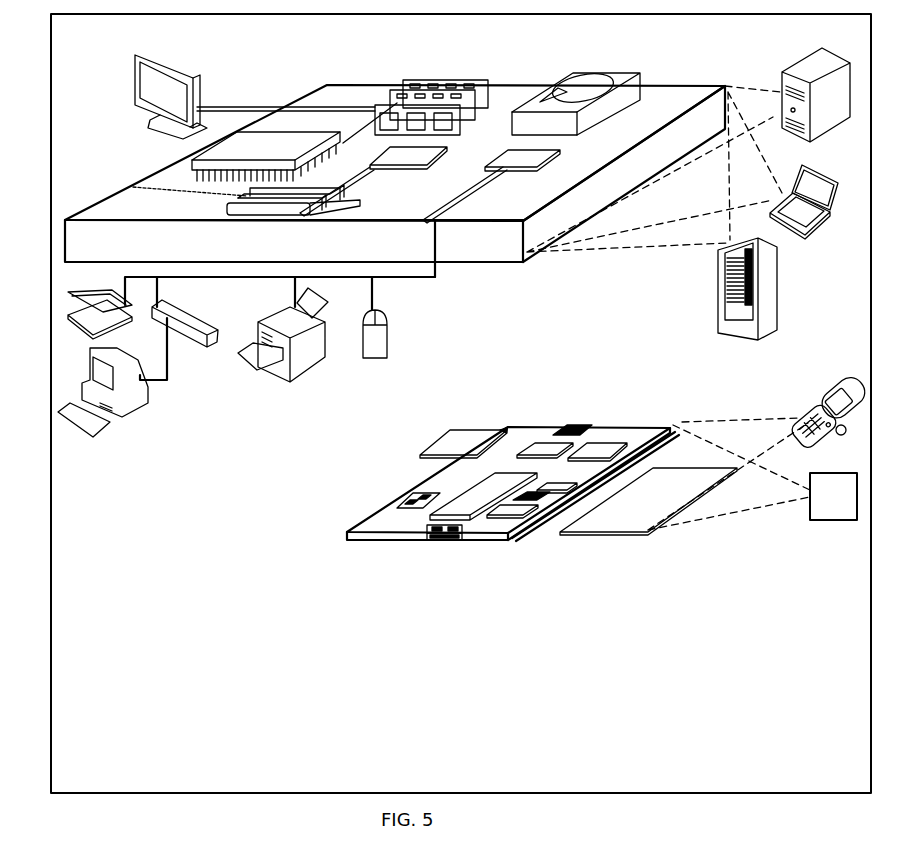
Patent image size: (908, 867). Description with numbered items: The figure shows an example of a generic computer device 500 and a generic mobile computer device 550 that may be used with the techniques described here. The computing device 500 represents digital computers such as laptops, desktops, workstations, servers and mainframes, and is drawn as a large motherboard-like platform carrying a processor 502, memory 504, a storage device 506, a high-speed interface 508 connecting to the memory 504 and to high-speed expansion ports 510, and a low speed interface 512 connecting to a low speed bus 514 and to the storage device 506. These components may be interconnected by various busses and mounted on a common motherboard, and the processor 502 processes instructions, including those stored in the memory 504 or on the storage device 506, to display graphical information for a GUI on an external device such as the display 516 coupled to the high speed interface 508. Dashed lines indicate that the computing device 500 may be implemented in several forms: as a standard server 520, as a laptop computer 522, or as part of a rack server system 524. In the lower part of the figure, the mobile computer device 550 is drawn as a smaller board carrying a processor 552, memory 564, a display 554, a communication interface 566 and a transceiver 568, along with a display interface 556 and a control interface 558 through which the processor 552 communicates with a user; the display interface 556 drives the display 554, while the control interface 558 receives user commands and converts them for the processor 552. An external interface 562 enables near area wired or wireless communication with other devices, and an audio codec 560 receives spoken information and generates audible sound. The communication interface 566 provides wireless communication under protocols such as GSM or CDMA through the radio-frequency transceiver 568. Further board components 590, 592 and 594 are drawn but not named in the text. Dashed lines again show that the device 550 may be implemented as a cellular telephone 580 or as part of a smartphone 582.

The computing device 500 is at (274, 68).
The processor 502 is at (187, 168).
The memory 504 is at (412, 82).
The storage device 506 is at (578, 72).
The high-speed interface 508 is at (373, 130).
The high-speed expansion ports 510 is at (132, 188).
The low speed interface 512 is at (522, 157).
The low speed bus 514 is at (440, 225).
The display 516 is at (138, 56).
The standard server 520 is at (780, 70).
The laptop computer 522 is at (803, 185).
The rack server system 524 is at (717, 307).
The mobile computer device 550 is at (497, 408).
The processor 552 is at (447, 520).
The display 554 is at (651, 530).
The display interface 556 is at (513, 532).
The control interface 558 is at (555, 508).
The audio codec 560 is at (536, 500).
The external interface 562 is at (443, 534).
The memory 564 is at (402, 505).
The communication interface 566 is at (543, 448).
The transceiver 568 is at (593, 450).
The cellular telephone 580 is at (836, 384).
The smartphone 582 is at (817, 474).
The chip 590 is at (570, 430).
The connector 592 is at (502, 433).
The plate 594 is at (455, 433).